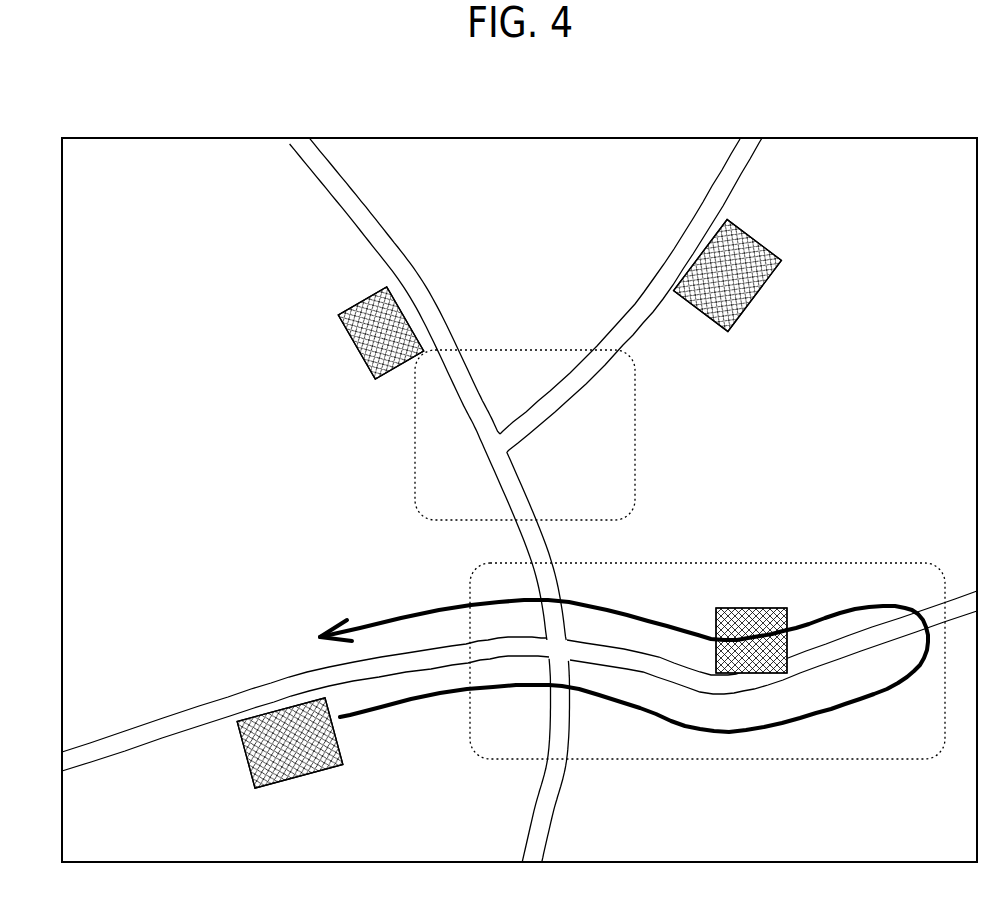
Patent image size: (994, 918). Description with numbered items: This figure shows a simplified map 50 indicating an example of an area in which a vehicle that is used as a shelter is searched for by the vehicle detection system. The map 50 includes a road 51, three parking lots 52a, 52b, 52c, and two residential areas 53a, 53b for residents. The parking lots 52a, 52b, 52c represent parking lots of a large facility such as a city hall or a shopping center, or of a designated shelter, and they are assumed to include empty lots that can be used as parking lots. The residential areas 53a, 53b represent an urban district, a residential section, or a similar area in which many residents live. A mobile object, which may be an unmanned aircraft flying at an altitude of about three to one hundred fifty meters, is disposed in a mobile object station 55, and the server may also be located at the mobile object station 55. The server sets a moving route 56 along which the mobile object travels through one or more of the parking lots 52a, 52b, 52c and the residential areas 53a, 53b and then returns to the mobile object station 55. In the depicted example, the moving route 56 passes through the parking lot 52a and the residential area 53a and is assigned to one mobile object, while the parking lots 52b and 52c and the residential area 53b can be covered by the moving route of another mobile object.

The map 50 is at (863, 138).
The road 51 is at (418, 304).
The parking lot 52a is at (758, 608).
The parking lot 52b is at (360, 300).
The parking lot 52c is at (755, 238).
The residential area 53a is at (853, 563).
The residential area 53b is at (635, 428).
The mobile object station 55 is at (245, 753).
The moving route 56 is at (427, 608).